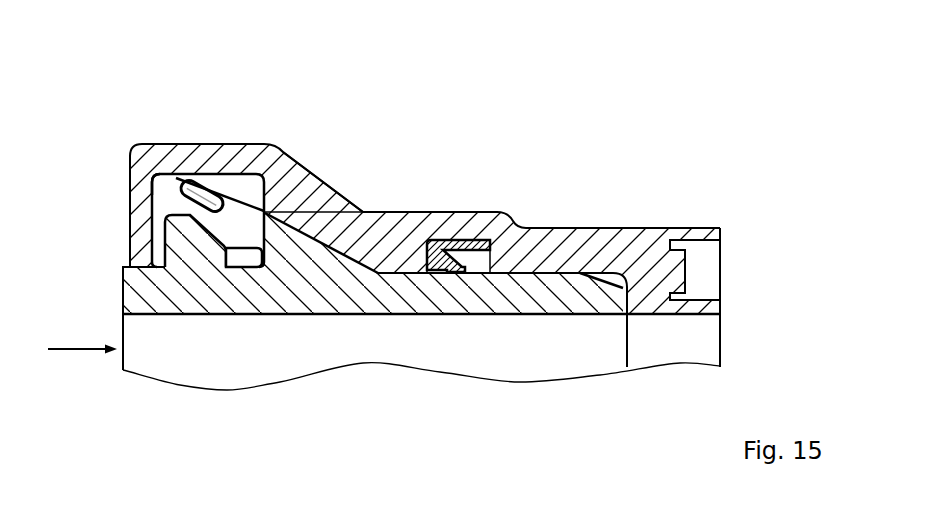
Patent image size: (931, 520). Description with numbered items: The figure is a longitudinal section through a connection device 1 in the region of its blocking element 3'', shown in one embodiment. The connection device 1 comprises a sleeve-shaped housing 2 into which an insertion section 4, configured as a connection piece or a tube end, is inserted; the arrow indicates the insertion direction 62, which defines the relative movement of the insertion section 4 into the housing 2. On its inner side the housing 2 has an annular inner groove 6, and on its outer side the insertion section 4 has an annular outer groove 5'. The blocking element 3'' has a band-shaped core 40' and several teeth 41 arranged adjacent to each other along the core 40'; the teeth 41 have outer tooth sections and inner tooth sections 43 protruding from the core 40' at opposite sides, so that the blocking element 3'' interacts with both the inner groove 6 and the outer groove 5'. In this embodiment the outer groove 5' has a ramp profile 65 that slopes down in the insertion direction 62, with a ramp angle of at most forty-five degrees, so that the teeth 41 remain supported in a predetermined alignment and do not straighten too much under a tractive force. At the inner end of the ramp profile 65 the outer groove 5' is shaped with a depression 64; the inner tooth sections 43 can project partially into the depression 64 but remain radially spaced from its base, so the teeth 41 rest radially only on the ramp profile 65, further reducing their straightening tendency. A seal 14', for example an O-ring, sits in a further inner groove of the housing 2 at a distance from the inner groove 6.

The connection device 1 is at (591, 119).
The housing 2 is at (624, 221).
The insertion section 4 is at (373, 326).
The inner groove 6 is at (145, 207).
The teeth 41 is at (180, 180).
The core 40' is at (185, 145).
The blocking element 3'' is at (213, 145).
The ramp profile 65 is at (227, 176).
The outer groove 5' is at (310, 167).
The depression 64 is at (222, 255).
The inner tooth sections 43 is at (247, 240).
The seal 14' is at (458, 211).
The insertion direction 62 is at (73, 350).